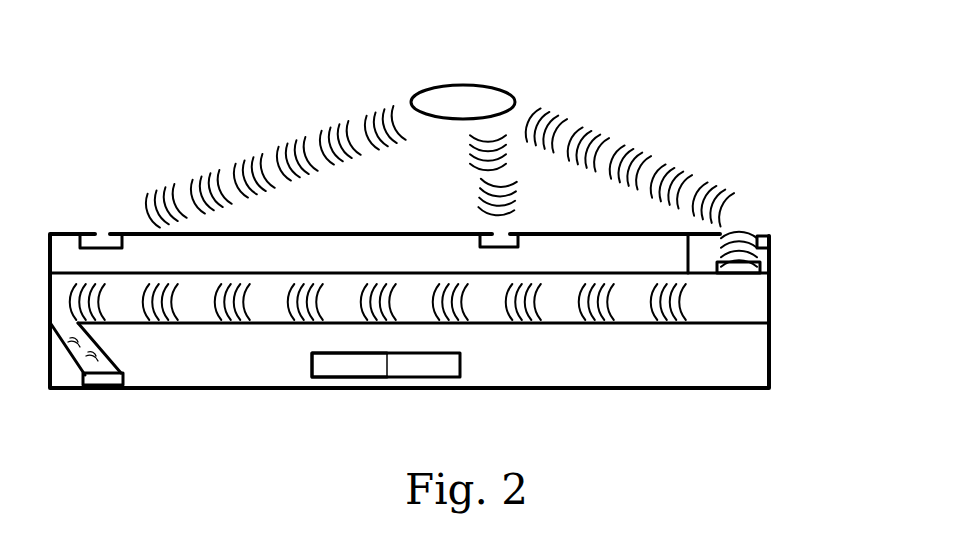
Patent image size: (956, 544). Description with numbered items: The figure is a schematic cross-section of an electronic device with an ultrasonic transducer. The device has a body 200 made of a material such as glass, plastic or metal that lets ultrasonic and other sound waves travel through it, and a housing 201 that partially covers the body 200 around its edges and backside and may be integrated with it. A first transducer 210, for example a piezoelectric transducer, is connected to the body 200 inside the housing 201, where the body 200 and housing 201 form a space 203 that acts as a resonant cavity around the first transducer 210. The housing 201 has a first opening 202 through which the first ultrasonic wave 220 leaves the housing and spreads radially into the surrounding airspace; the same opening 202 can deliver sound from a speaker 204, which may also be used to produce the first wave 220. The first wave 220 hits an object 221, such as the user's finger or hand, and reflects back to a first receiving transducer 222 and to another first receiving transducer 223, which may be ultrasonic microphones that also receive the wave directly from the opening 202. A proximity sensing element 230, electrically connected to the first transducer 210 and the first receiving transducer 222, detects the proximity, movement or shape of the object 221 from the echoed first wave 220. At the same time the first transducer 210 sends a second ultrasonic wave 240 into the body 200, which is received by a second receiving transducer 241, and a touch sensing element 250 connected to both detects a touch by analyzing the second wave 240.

The body 200 is at (757, 313).
The housing 201 is at (770, 234).
The first opening 202 is at (764, 233).
The space 203 is at (700, 264).
The speaker 204 is at (768, 245).
The first transducer 210 is at (760, 266).
The first ultrasonic wave 220 is at (613, 149).
The object 221 is at (480, 103).
The first receiving transducer 222 is at (481, 232).
The first receiving transducer 223 is at (92, 242).
The proximity sensing element 230 is at (405, 367).
The second ultrasonic wave 240 is at (627, 312).
The second receiving transducer 241 is at (100, 380).
The touch sensing element 250 is at (334, 366).